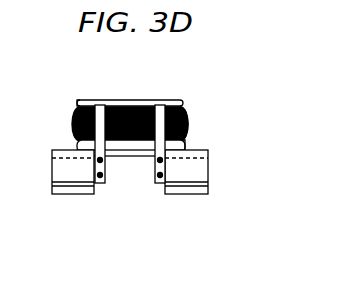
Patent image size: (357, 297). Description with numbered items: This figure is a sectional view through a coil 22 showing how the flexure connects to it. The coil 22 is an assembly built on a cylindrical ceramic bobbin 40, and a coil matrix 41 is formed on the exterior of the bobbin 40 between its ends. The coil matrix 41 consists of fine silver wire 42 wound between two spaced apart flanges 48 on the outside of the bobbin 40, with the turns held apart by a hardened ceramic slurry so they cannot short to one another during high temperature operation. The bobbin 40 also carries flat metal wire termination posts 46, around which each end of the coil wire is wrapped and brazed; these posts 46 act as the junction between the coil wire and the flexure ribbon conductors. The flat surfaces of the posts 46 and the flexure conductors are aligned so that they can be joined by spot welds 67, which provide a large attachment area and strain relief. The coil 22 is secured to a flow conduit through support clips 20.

The support clip 20 is at (52, 173).
The coil 22 is at (78, 147).
The bobbin 40 is at (173, 99).
The coil matrix 41 is at (72, 120).
The silver wire 42 is at (188, 121).
The termination post 46 is at (162, 183).
The flange 48 is at (78, 104).
The spot weld 67 is at (155, 163).